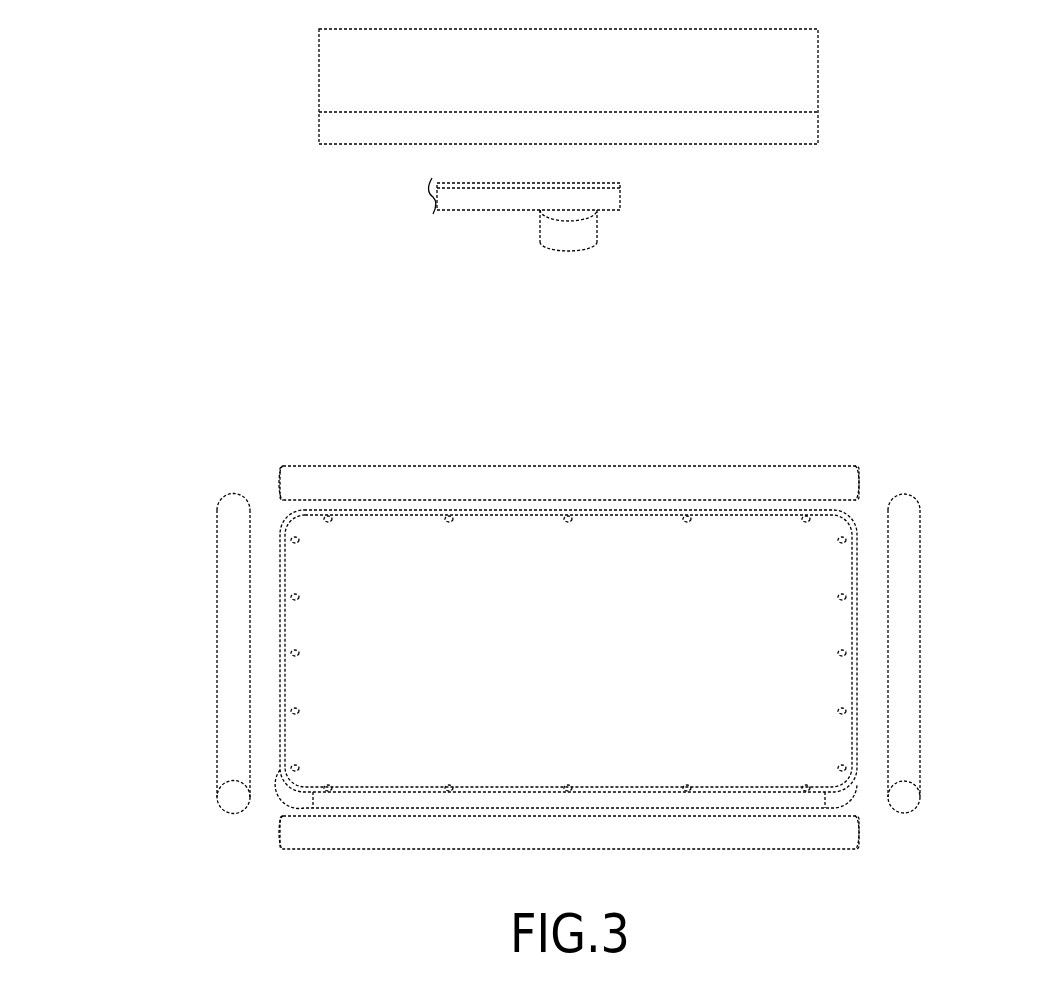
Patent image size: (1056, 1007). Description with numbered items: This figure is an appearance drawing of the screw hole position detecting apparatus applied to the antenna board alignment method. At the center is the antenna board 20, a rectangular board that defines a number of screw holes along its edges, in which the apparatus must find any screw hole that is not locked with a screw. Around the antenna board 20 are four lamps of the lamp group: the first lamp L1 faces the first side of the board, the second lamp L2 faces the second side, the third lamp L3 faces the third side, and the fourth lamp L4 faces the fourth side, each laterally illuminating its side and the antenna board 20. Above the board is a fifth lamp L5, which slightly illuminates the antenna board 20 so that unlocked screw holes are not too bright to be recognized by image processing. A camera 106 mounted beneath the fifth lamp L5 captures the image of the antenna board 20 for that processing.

The fifth lamp L5 is at (793, 67).
The camera 106 is at (597, 227).
The first lamp L1 is at (670, 478).
The second lamp L2 is at (225, 653).
The third lamp L3 is at (713, 838).
The fourth lamp L4 is at (913, 653).
The antenna board 20 is at (803, 593).